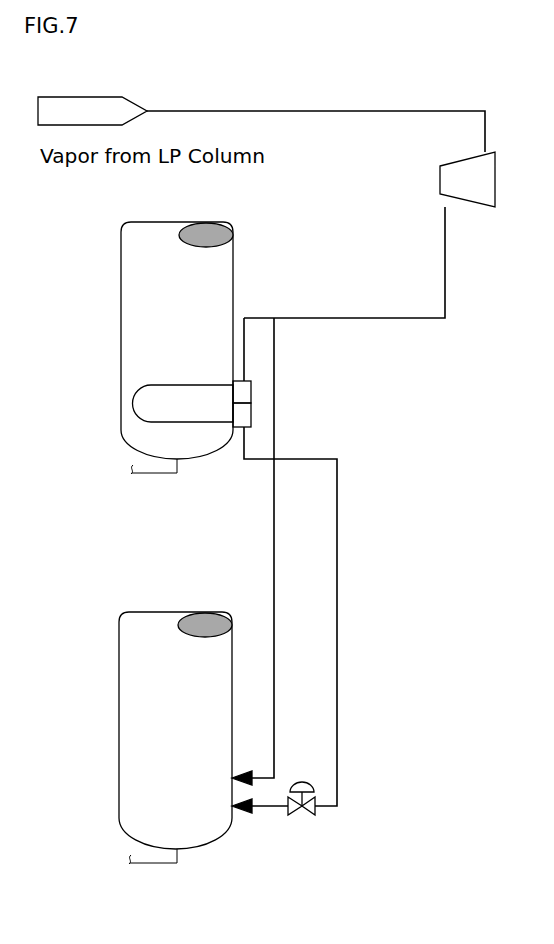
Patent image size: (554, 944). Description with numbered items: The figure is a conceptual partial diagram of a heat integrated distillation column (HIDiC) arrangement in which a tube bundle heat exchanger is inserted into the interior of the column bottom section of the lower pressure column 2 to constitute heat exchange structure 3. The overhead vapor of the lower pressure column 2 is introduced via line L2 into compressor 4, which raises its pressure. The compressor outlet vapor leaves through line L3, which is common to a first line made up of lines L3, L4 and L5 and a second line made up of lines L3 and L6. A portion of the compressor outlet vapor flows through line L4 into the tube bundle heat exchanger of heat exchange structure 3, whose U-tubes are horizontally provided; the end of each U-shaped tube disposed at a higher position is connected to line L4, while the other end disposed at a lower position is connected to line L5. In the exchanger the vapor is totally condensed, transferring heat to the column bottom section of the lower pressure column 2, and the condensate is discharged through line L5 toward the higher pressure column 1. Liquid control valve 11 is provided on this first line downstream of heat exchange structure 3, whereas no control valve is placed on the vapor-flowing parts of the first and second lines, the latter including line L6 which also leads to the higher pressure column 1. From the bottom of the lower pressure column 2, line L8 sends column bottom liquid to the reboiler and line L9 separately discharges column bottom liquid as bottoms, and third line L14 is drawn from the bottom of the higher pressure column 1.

The higher pressure column 1 is at (182, 775).
The lower pressure column 2 is at (182, 355).
The heat exchange structure 3 is at (133, 405).
The compressor 4 is at (480, 190).
The control valve 11 is at (302, 816).
The line L2 is at (291, 99).
The line L3 is at (455, 271).
The line L4 is at (265, 312).
The line L5 is at (343, 601).
The line L6 is at (282, 376).
The line L8 is at (245, 622).
The line L9 is at (149, 479).
The third line L14 is at (153, 869).